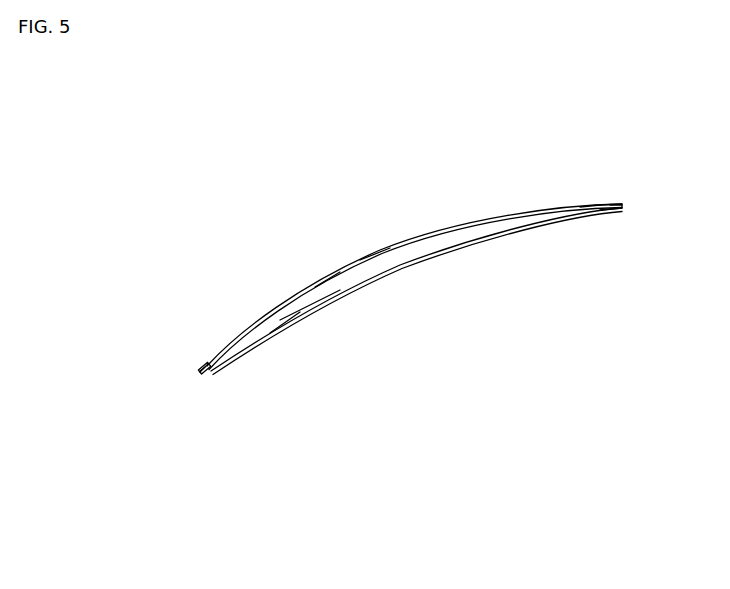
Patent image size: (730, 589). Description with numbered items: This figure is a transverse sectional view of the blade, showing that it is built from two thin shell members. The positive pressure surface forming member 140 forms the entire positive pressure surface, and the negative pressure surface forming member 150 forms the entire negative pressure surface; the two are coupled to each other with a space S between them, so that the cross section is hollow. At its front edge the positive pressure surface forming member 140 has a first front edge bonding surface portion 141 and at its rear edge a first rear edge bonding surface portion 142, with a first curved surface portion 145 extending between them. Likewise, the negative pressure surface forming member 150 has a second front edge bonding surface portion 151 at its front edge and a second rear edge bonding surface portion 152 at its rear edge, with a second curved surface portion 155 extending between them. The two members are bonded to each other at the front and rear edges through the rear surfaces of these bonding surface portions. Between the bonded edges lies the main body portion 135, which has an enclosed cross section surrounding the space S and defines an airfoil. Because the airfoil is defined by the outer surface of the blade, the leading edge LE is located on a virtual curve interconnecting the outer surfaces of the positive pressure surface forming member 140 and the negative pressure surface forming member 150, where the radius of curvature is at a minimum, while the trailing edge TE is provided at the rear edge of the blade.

The positive pressure surface forming member 140 is at (307, 277).
The first front edge bonding surface portion 141 is at (199, 368).
The first rear edge bonding surface portion 142 is at (594, 207).
The first curved surface portion 145 is at (327, 280).
The negative pressure surface forming member 150 is at (384, 330).
The second front edge bonding surface portion 151 is at (205, 375).
The second rear edge bonding surface portion 152 is at (604, 209).
The second curved surface portion 155 is at (285, 328).
The main body portion 135 is at (404, 507).
The leading edge LE is at (212, 362).
The trailing edge TE is at (580, 208).
The space S is at (380, 266).